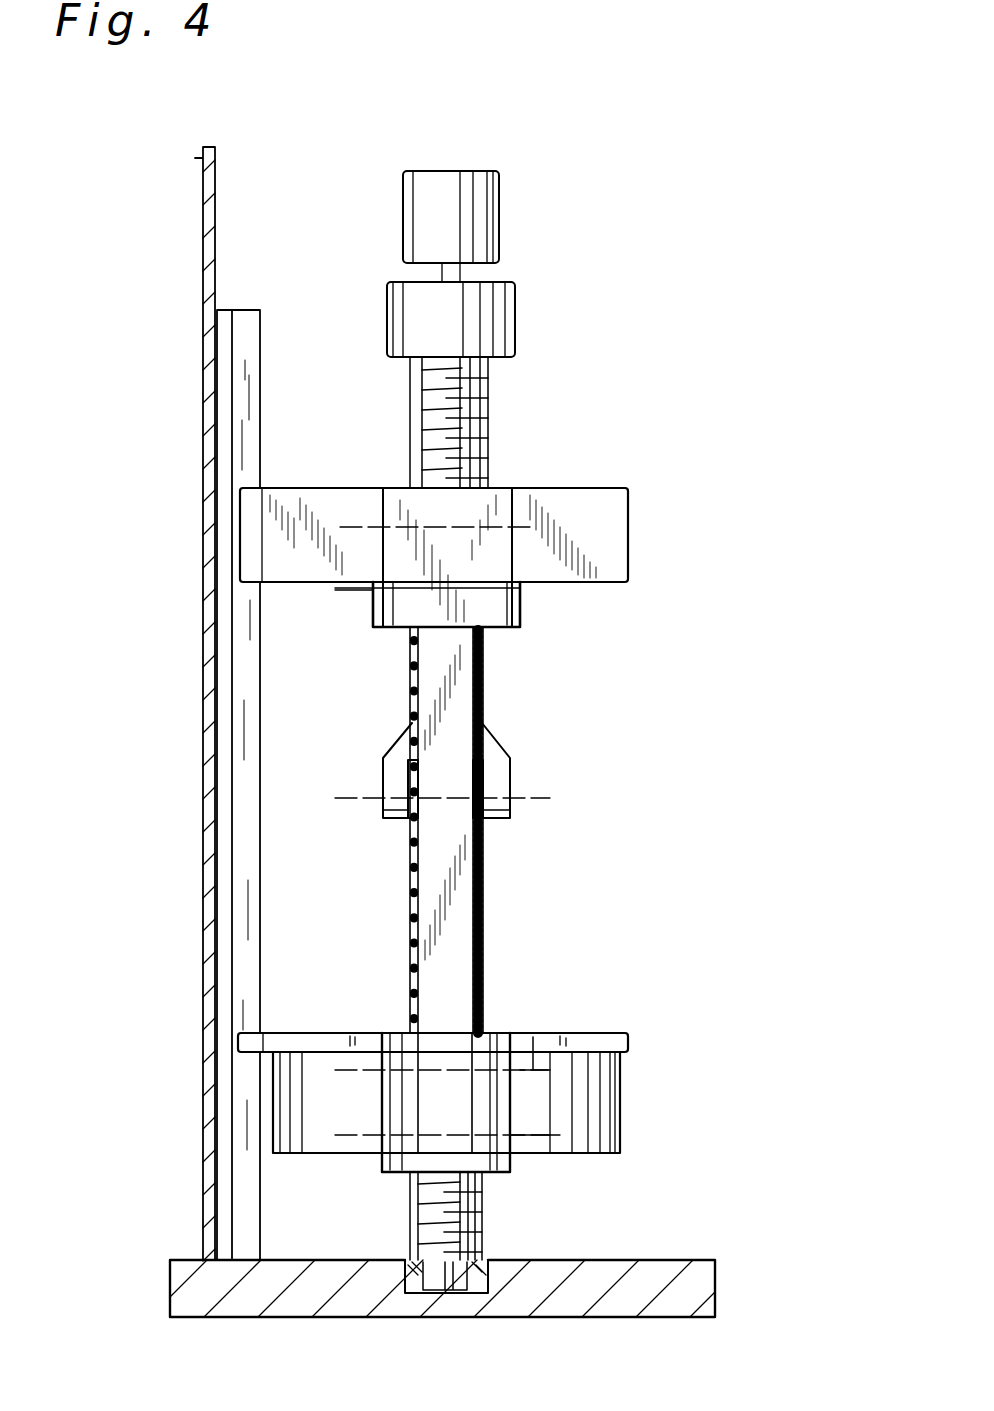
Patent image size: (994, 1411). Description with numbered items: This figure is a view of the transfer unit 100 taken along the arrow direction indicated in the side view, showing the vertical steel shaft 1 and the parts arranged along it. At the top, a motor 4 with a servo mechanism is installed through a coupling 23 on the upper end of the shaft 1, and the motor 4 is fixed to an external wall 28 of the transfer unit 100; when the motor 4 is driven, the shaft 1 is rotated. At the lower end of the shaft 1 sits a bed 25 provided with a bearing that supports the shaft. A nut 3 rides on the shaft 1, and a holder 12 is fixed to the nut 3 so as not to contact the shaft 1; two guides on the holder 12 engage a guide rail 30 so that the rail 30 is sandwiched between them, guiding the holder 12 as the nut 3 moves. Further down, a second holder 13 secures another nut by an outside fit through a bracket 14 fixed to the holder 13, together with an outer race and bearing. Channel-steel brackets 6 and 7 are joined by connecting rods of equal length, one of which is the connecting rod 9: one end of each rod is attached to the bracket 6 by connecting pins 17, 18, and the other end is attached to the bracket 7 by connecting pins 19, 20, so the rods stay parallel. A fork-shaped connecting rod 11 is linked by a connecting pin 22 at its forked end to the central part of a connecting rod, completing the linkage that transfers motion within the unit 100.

The transfer unit 100 is at (677, 238).
The external wall 28 is at (203, 268).
The guide rail 30 is at (252, 353).
The motor with servo mechanism 4 is at (420, 200).
The coupling 23 is at (502, 303).
The steel shaft 1 is at (488, 393).
The holder 12 is at (615, 512).
The bracket having channel steel structure 7 is at (495, 513).
The connecting pin 19 is at (522, 530).
The connecting pin 20 is at (527, 590).
The nut 3 is at (525, 595).
The connecting rod 9 is at (487, 687).
The fork-shaped connecting rod 11 is at (497, 770).
The connecting pin 22 is at (530, 800).
The holder 13 is at (608, 1038).
The bracket 14 is at (602, 1078).
The bracket having channel steel structure 6 is at (392, 1160).
The connecting pin 17 is at (533, 1037).
The connecting pin 18 is at (532, 1137).
The bed 25 is at (657, 1268).